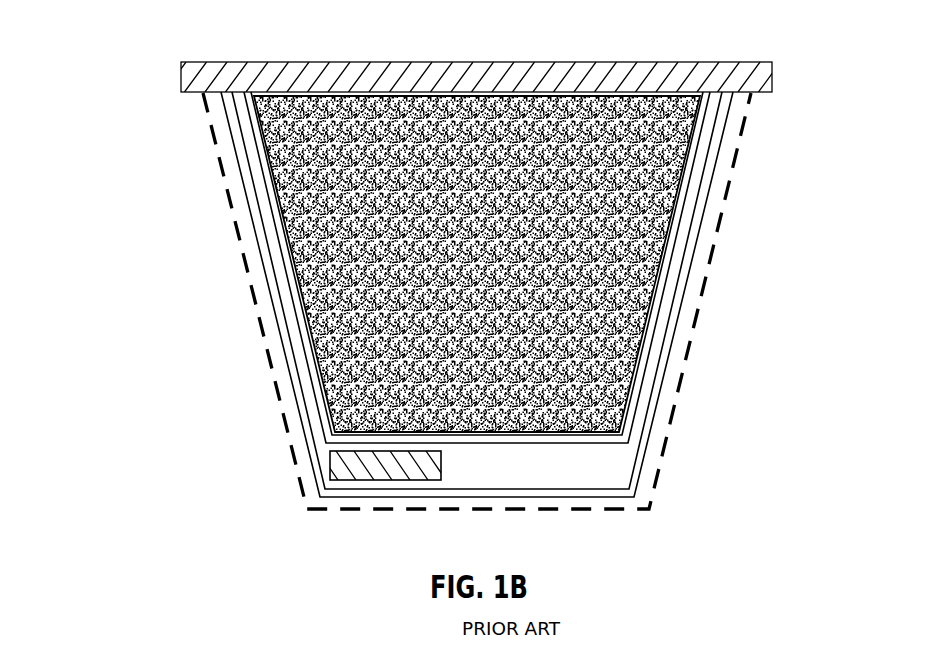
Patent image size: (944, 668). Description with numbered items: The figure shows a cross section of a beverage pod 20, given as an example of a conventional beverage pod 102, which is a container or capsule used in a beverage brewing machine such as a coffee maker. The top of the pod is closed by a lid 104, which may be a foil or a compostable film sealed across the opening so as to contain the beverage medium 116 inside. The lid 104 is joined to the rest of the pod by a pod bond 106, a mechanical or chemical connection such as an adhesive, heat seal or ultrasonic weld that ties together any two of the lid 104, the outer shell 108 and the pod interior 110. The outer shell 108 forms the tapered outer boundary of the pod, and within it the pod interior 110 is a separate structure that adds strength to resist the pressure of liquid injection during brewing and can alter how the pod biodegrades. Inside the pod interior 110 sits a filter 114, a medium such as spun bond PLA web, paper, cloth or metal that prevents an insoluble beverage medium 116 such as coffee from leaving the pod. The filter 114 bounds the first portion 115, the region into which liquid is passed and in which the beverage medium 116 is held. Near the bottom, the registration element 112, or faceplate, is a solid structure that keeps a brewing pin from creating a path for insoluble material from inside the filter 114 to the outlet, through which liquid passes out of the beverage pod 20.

The beverage pod 20 is at (448, 256).
The conventional beverage pod 102 is at (448, 256).
The lid 104 is at (478, 63).
The pod bond 106 is at (503, 46).
The outer shell 108 is at (275, 385).
The pod interior 110 is at (270, 272).
The registration element 112 is at (335, 466).
The filter 114 is at (686, 214).
The first portion 115 is at (462, 268).
The beverage medium 116 is at (637, 268).